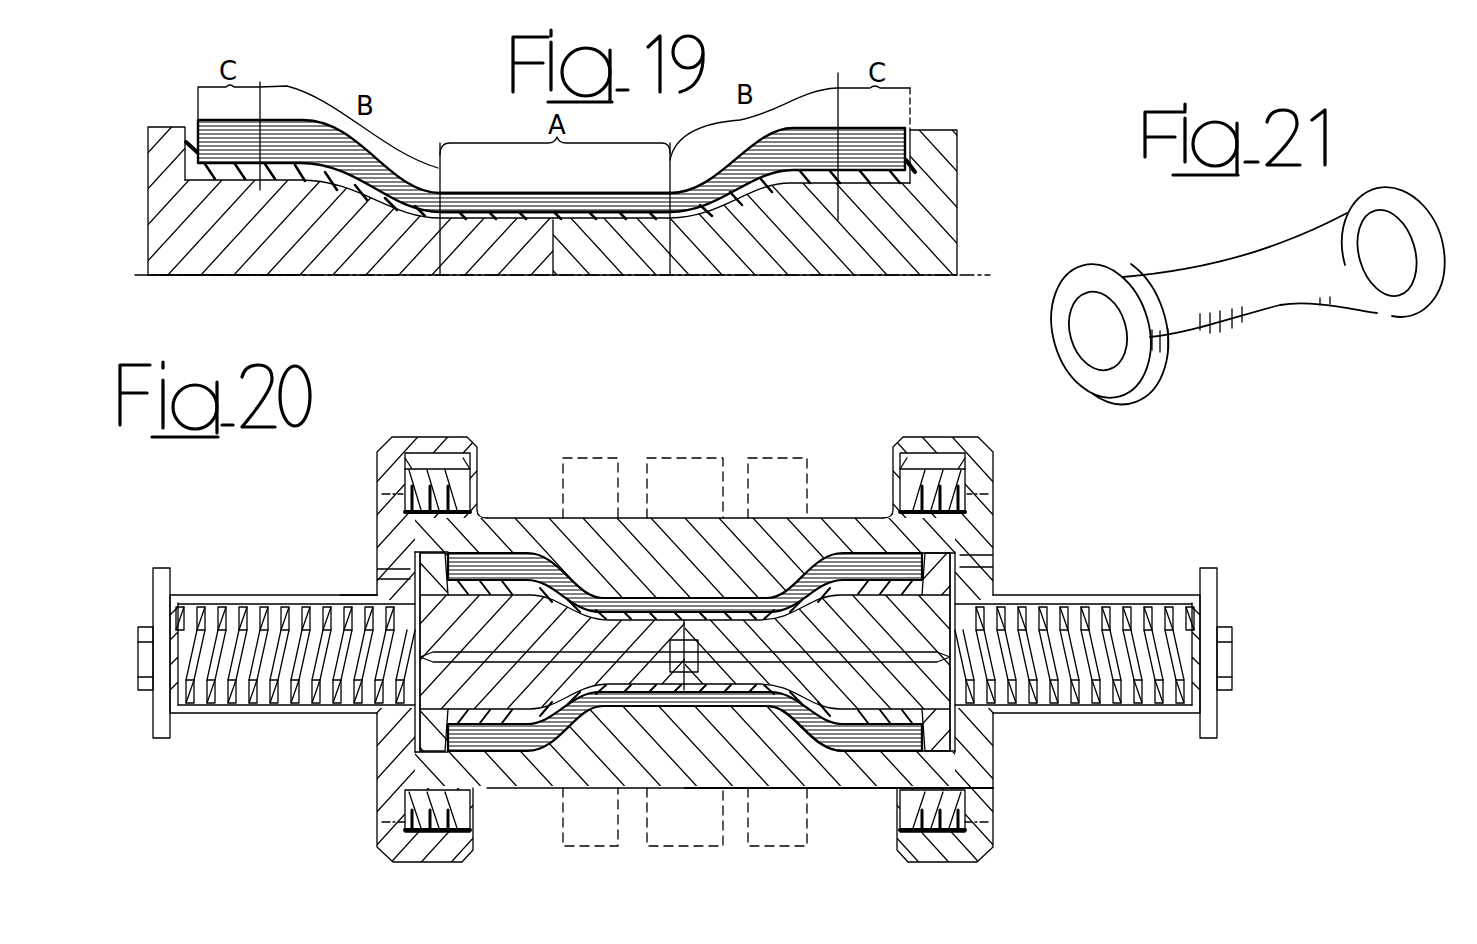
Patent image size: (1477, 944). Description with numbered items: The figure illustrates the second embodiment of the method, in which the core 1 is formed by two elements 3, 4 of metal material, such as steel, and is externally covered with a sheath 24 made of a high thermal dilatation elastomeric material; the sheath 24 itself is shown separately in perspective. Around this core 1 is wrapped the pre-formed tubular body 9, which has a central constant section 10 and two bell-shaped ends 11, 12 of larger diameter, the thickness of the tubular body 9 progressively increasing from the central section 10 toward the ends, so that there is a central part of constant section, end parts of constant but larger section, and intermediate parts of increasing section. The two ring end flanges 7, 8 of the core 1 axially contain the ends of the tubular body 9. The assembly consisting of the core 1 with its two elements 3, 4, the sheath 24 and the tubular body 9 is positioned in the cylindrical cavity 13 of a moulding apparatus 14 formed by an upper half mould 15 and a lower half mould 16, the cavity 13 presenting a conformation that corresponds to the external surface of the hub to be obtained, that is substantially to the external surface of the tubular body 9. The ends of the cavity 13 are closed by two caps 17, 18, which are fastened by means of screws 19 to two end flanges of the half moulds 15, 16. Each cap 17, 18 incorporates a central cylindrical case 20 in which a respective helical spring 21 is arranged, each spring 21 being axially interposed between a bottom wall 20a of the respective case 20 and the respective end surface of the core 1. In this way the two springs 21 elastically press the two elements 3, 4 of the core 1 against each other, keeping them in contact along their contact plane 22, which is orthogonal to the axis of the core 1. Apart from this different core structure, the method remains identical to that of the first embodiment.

In FIG. 19, the core 1 is at (148, 223).
In FIG. 19, the element of the core 3 is at (262, 248).
In FIG. 20, the element of the core 3 is at (507, 750).
In FIG. 19, the element of the core 4 is at (780, 257).
In FIG. 20, the element of the core 4 is at (840, 697).
In FIG. 19, the ring end flange 7 is at (163, 140).
In FIG. 20, the ring end flange 7 is at (403, 565).
In FIG. 19, the ring end flange 8 is at (940, 143).
In FIG. 20, the ring end flange 8 is at (997, 560).
In FIG. 19, the pre-formed tubular body 9 is at (318, 134).
In FIG. 20, the pre-formed tubular body 9 is at (513, 554).
In FIG. 19, the central constant section 10 is at (473, 207).
In FIG. 19, the bell-shaped end 11 is at (218, 138).
In FIG. 20, the bell-shaped end 11 is at (477, 757).
In FIG. 19, the bell-shaped end 12 is at (800, 125).
In FIG. 20, the bell-shaped end 12 is at (892, 718).
In FIG. 20, the cylindrical cavity 13 is at (777, 627).
In FIG. 20, the moulding apparatus 14 is at (341, 558).
In FIG. 20, the upper half mould 15 is at (557, 518).
In FIG. 20, the lower half mould 16 is at (602, 800).
In FIG. 20, the cap 17 is at (377, 753).
In FIG. 20, the cap 18 is at (993, 768).
In FIG. 20, the screw 19 is at (930, 810).
In FIG. 20, the central cylindrical case 20 is at (1143, 593).
In FIG. 20, the bottom wall 20a is at (1215, 617).
In FIG. 20, the helical spring 21 is at (1158, 710).
In FIG. 20, the contact plane 22 is at (692, 640).
In FIG. 19, the sheath 24 is at (462, 221).
In FIG. 21, the sheath 24 is at (1255, 297).